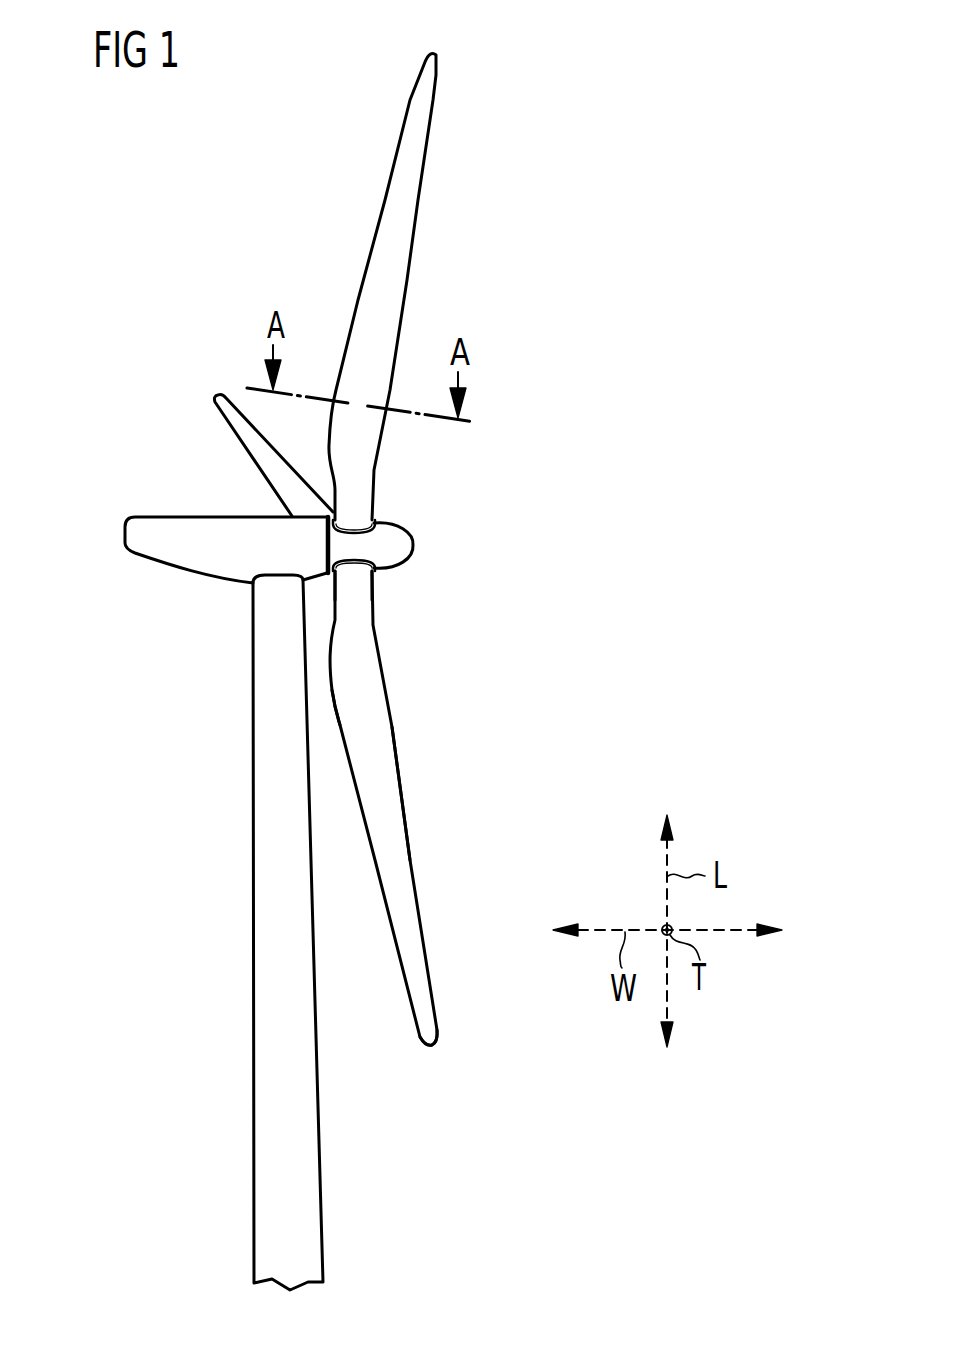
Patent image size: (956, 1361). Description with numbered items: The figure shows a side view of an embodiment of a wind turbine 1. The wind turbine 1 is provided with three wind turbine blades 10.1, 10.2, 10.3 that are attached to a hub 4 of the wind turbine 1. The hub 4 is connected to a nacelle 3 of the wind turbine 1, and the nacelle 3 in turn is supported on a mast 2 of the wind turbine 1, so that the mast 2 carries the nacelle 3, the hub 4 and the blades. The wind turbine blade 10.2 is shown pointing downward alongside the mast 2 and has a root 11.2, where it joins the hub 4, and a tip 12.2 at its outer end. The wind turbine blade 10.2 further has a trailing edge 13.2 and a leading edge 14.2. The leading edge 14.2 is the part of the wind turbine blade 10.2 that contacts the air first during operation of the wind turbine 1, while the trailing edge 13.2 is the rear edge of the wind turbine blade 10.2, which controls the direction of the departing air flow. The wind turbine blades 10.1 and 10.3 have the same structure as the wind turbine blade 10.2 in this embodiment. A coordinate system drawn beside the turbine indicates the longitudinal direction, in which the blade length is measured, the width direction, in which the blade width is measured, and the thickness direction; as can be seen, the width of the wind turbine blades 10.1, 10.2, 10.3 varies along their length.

The wind turbine 1 is at (135, 366).
The mast 2 is at (268, 920).
The nacelle 3 is at (171, 517).
The hub 4 is at (402, 541).
The wind turbine blade 10.1 is at (392, 286).
The wind turbine blade 10.2 is at (378, 728).
The wind turbine blade 10.3 is at (215, 405).
The root 11.2 is at (372, 575).
The tip 12.2 is at (433, 1048).
The trailing edge 13.2 is at (340, 723).
The leading edge 14.2 is at (409, 835).